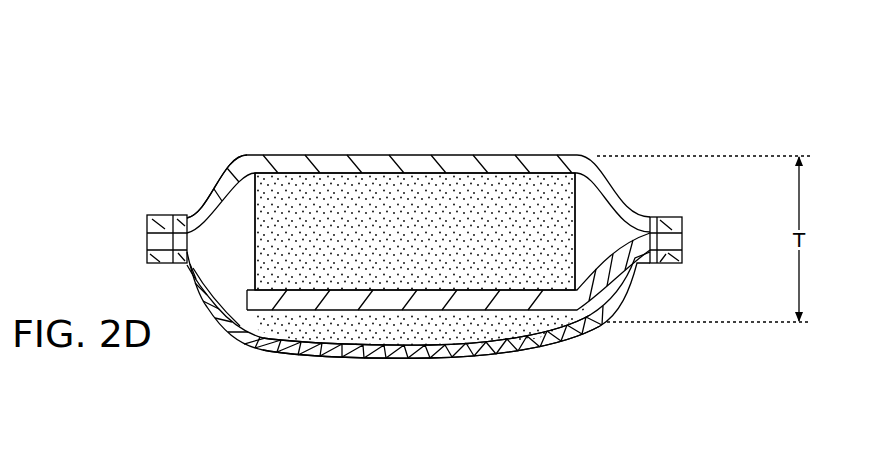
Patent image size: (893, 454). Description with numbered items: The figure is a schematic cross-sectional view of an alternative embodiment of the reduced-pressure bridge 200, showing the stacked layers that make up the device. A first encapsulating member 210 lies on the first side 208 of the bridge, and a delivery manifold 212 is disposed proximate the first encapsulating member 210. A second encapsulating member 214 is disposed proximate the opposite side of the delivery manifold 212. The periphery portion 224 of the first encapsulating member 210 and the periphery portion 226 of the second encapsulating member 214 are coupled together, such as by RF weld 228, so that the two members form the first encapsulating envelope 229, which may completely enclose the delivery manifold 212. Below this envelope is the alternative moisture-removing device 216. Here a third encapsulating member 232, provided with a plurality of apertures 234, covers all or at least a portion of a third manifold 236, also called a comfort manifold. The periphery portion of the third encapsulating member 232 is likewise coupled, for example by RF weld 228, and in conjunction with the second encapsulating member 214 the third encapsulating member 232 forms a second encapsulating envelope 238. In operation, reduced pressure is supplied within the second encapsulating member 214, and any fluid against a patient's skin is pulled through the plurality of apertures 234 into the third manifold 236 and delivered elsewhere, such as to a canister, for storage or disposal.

The reduced-pressure bridge 200 is at (614, 94).
The first side 208 is at (493, 155).
The first encapsulating member 210 is at (330, 165).
The delivery manifold 212 is at (393, 248).
The second encapsulating member 214 is at (557, 303).
The moisture-removing device 216 is at (266, 349).
The periphery portion of the first encapsulating member 224 is at (143, 223).
The periphery portion of the second encapsulating member 226 is at (683, 238).
The RF weld 228 is at (186, 220).
The first encapsulating envelope 229 is at (247, 155).
The third encapsulating member 232 is at (363, 363).
The apertures 234 is at (453, 358).
The third manifold 236 is at (412, 340).
The second encapsulating envelope 238 is at (510, 363).